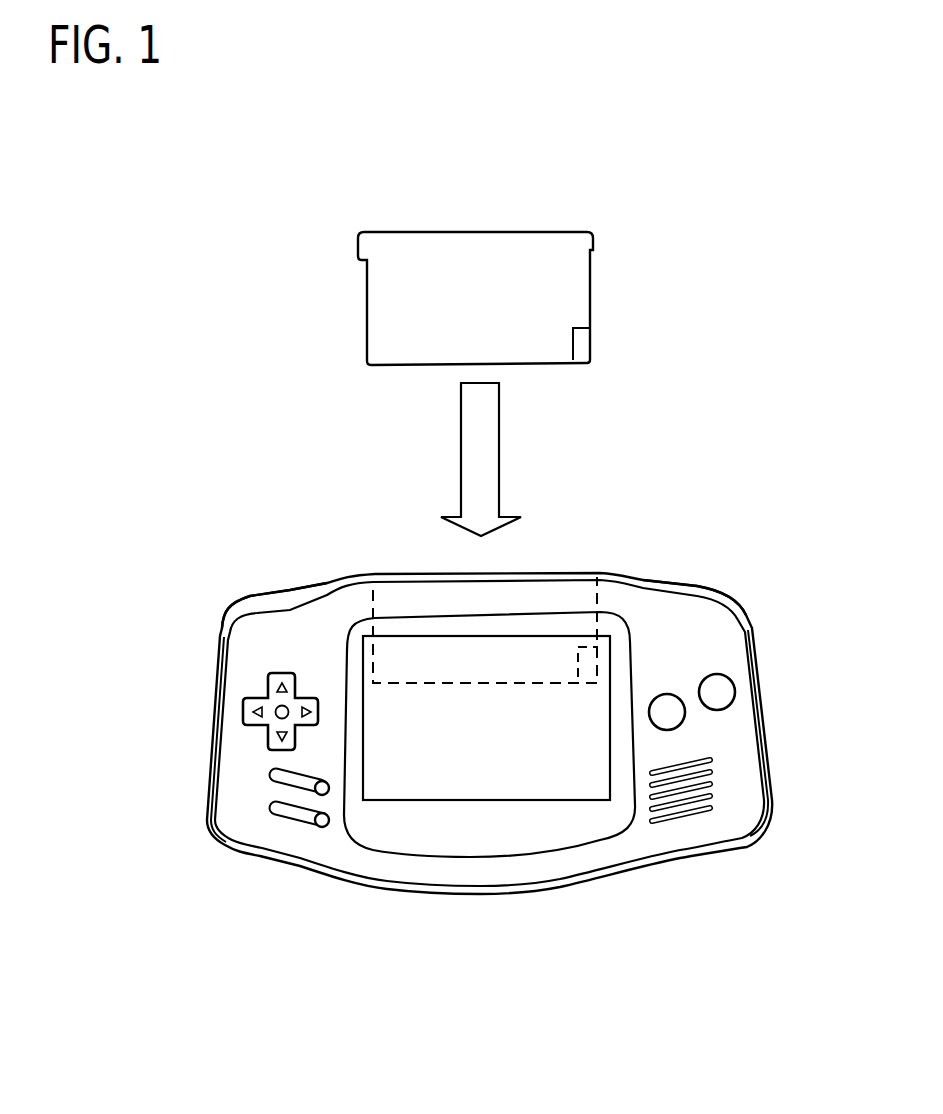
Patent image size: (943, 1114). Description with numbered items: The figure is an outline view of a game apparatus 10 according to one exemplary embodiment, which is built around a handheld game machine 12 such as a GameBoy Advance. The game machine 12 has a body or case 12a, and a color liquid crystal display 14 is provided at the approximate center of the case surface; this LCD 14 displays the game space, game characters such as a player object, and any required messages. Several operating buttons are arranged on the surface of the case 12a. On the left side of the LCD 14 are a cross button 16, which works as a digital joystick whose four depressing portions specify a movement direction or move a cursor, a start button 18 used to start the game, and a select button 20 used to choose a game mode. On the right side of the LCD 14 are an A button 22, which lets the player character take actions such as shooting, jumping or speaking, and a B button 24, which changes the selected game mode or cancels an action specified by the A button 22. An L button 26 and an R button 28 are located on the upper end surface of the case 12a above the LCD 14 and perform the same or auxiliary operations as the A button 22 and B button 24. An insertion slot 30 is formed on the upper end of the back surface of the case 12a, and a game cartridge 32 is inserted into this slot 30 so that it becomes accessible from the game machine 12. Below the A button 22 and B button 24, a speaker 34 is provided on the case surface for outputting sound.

The game apparatus 10 is at (215, 160).
The game machine 12 is at (352, 528).
The case 12a is at (630, 855).
The liquid crystal display 14 is at (488, 785).
The cross button 16 is at (242, 668).
The start button 18 is at (272, 788).
The select button 20 is at (320, 827).
The A button 22 is at (735, 692).
The B button 24 is at (665, 697).
The L button 26 is at (275, 595).
The R button 28 is at (695, 588).
The insertion slot 30 is at (538, 568).
The game cartridge 32 is at (575, 285).
The speaker 34 is at (742, 786).